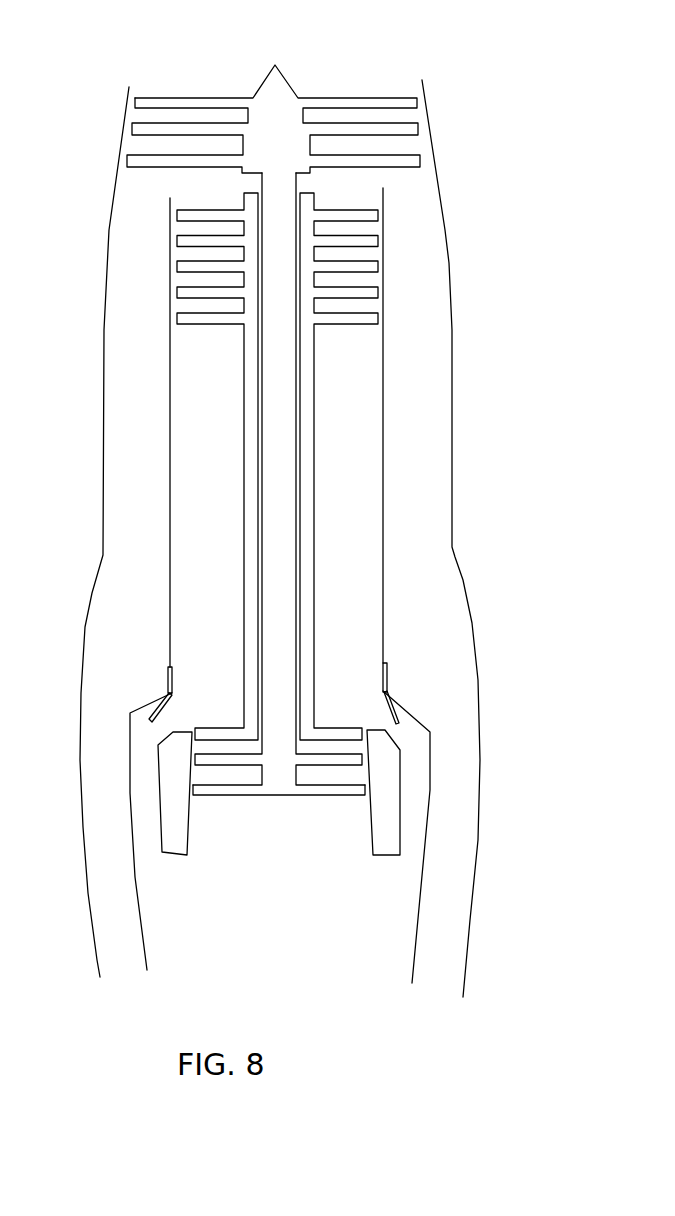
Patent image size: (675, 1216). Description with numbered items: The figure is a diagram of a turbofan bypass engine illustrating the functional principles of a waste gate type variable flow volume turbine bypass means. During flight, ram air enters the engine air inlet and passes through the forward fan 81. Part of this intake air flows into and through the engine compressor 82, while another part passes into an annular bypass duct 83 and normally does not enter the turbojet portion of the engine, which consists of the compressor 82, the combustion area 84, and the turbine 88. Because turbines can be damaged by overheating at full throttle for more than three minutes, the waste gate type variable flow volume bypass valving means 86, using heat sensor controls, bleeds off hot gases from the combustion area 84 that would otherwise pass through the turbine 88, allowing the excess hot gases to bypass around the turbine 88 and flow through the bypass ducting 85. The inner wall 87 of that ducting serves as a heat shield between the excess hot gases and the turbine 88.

The forward fan 81 is at (342, 98).
The engine compressor 82 is at (365, 258).
The annular bypass duct 83 is at (422, 392).
The combustion area 84 is at (350, 545).
The bypass ducting 85 is at (415, 745).
The waste gate type variable flow volume bypass valving means 86 is at (389, 702).
The inner wall of the bypass ducting 87 is at (402, 803).
The turbine 88 is at (345, 795).